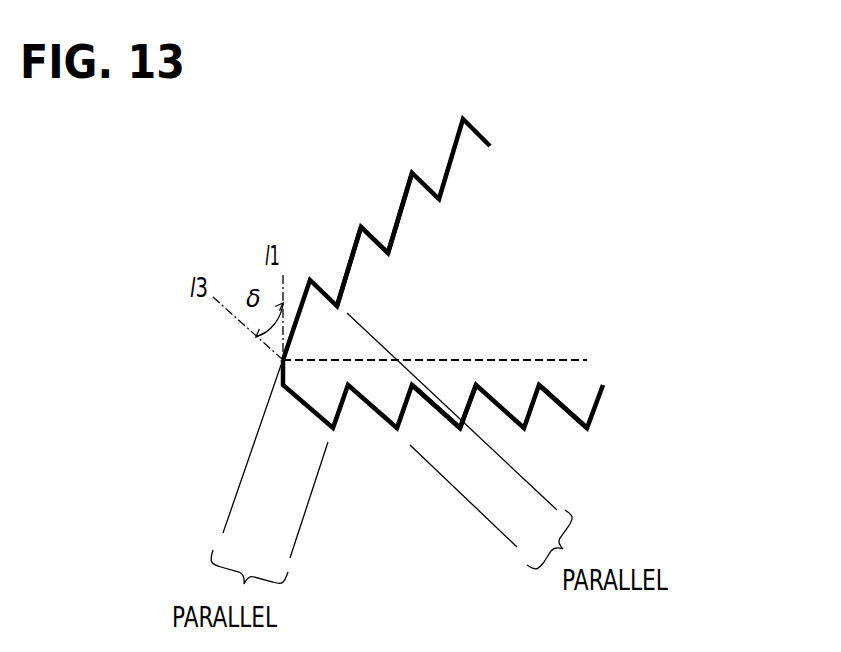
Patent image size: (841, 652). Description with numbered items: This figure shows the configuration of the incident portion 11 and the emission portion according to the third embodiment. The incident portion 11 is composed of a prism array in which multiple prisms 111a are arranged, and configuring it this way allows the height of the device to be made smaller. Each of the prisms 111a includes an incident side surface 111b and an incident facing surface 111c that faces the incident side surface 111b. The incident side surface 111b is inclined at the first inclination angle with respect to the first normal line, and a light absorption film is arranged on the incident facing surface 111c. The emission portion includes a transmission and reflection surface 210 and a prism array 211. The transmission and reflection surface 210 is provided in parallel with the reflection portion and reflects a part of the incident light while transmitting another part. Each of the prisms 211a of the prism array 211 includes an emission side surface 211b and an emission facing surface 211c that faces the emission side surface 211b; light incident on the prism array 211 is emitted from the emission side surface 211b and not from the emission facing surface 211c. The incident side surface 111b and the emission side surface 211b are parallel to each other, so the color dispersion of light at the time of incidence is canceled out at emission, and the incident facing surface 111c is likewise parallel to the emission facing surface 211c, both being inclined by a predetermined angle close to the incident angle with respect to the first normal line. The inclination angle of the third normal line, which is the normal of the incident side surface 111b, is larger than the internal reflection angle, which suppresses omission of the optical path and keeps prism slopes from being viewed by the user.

The incident portion 11 is at (480, 123).
The prism 111a is at (403, 203).
The incident side surface 111b is at (353, 250).
The incident facing surface 111c is at (372, 233).
The transmission and reflection surface 210 is at (508, 357).
The prism array 211 is at (603, 398).
The prism 211a is at (553, 393).
The emission side surface 211b is at (468, 410).
The emission facing surface 211c is at (430, 415).